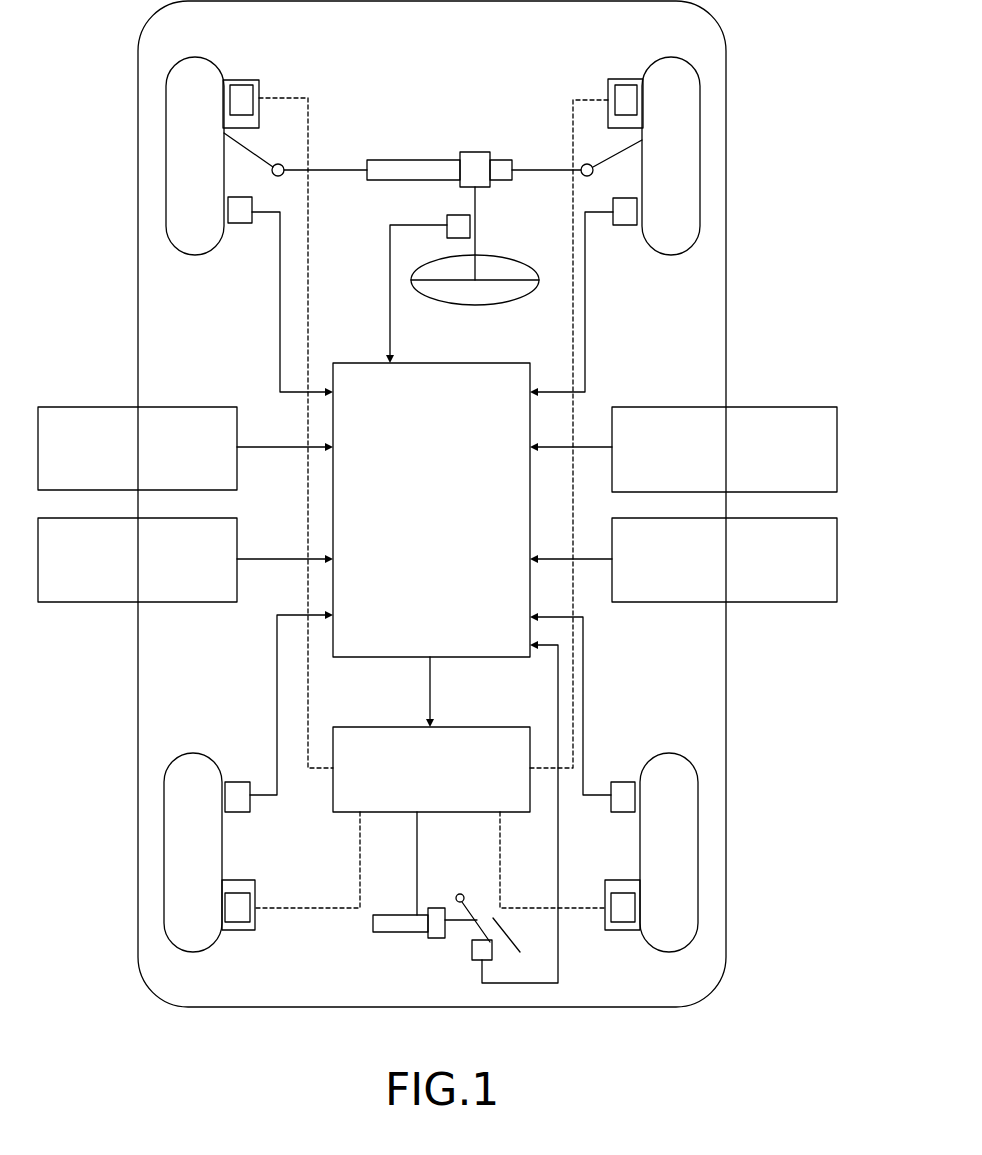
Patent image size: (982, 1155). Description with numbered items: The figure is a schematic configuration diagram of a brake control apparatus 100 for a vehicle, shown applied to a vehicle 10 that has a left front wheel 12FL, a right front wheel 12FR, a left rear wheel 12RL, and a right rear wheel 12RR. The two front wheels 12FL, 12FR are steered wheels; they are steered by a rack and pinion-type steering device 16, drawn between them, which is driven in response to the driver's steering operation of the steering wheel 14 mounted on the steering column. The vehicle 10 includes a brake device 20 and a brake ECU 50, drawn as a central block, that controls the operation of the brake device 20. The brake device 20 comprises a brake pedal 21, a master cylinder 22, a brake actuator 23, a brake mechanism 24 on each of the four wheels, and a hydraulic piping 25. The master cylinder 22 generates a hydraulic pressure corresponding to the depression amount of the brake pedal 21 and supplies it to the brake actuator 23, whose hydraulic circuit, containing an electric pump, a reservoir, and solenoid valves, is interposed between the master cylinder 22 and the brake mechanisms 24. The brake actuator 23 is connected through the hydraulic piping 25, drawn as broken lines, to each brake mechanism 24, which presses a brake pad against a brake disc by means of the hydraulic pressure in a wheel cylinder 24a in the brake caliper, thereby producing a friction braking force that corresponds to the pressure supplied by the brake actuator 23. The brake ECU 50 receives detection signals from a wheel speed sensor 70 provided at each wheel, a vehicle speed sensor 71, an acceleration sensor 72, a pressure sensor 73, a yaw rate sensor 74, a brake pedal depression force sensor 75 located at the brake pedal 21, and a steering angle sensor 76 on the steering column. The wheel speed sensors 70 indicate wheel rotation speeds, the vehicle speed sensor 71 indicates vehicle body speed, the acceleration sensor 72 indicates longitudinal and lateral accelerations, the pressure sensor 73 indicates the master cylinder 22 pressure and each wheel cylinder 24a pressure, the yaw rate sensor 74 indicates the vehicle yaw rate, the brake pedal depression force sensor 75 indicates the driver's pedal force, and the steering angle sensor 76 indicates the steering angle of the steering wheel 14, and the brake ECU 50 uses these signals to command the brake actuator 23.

The brake control apparatus 100 is at (742, 97).
The vehicle 10 is at (726, 336).
The left front wheel 12FL is at (138, 165).
The right front wheel 12FR is at (726, 170).
The left rear wheel 12RL is at (138, 860).
The right rear wheel 12RR is at (726, 865).
The steering wheel 14 is at (470, 305).
The rack and pinion-type steering device 16 is at (468, 141).
The brake device 20 is at (358, 938).
The brake pedal 21 is at (497, 944).
The master cylinder 22 is at (392, 932).
The brake actuator 23 is at (470, 727).
The brake mechanism 24 is at (237, 80).
The wheel cylinder 24a is at (256, 80).
The hydraulic piping 25 is at (310, 228).
The brake ECU 50 is at (437, 363).
The wheel speed sensor 70 is at (240, 223).
The vehicle speed sensor 71 is at (670, 407).
The acceleration sensor 72 is at (665, 602).
The pressure sensor 73 is at (196, 407).
The yaw rate sensor 74 is at (190, 602).
The brake pedal depression force sensor 75 is at (476, 962).
The steering angle sensor 76 is at (455, 215).